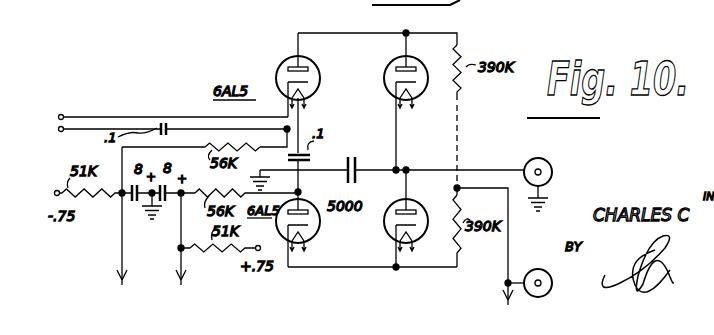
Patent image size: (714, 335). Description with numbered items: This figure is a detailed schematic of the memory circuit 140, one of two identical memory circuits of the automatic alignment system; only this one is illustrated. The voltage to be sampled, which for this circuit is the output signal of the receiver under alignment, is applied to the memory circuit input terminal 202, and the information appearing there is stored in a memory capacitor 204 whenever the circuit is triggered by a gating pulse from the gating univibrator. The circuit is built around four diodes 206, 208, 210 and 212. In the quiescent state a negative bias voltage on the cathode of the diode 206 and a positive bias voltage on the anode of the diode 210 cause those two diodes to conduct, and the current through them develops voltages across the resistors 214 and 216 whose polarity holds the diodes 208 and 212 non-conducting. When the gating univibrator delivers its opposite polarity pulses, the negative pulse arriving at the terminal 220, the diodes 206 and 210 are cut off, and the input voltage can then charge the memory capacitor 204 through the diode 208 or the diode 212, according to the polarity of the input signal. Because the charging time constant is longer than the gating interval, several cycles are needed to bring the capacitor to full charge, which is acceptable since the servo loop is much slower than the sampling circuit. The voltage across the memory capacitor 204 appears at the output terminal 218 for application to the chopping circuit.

The memory circuit 140 is at (292, 26).
The memory circuit input terminal 202 is at (514, 265).
The memory capacitor 204 is at (361, 148).
The diode 206 is at (283, 61).
The diode 208 is at (421, 48).
The diode 210 is at (313, 237).
The diode 212 is at (432, 194).
The resistor 214 is at (466, 52).
The resistor 216 is at (458, 256).
The output terminal 218 is at (545, 150).
The terminal 220 is at (63, 114).